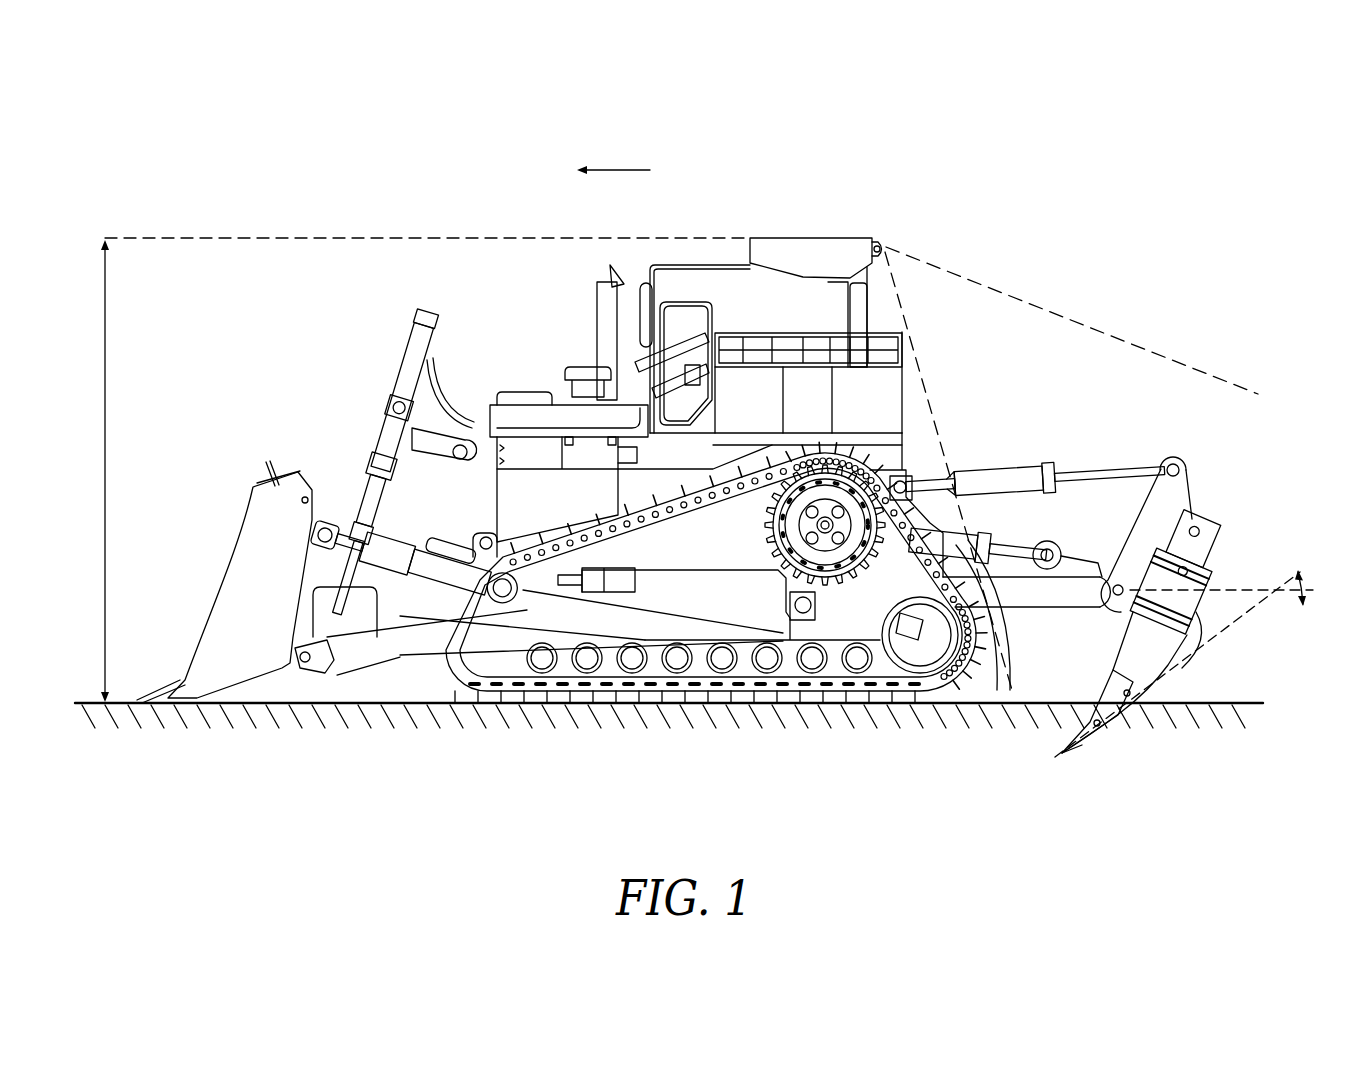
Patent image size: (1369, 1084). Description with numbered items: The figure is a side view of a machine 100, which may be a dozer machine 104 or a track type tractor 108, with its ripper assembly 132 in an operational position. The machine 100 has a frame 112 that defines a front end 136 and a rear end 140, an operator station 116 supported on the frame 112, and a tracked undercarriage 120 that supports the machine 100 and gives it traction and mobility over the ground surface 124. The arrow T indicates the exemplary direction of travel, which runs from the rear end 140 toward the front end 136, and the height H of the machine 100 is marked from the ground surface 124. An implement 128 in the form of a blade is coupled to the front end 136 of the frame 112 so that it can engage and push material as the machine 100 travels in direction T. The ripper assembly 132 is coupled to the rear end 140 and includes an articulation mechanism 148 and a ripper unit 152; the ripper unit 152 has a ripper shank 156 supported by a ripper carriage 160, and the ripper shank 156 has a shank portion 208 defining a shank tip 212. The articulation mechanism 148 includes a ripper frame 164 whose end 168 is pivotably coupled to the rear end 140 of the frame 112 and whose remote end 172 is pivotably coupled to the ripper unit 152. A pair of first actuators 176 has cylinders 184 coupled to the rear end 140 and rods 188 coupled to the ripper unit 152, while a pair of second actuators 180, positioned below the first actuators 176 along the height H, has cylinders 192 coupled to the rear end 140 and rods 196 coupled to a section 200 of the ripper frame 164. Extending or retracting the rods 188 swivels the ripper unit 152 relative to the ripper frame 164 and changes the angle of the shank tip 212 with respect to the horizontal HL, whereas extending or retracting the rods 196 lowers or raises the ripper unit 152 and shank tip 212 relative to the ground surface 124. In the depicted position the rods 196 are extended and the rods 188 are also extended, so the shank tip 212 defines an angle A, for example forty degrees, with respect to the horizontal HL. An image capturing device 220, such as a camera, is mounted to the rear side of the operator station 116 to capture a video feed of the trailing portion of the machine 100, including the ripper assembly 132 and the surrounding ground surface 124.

The machine 100 is at (216, 132).
The dozer machine 104 is at (240, 210).
The track type tractor 108 is at (1115, 312).
The frame 112 is at (920, 425).
The operator station 116 is at (868, 297).
The tracked undercarriage 120 is at (445, 695).
The ground surface 124 is at (1220, 700).
The implement 128 is at (230, 556).
The ripper assembly 132 is at (1194, 475).
The front end 136 is at (408, 500).
The rear end 140 is at (940, 478).
The articulation mechanism 148 is at (1075, 458).
The ripper unit 152 is at (1218, 595).
The ripper shank 156 is at (1097, 711).
The ripper carriage 160 is at (1171, 591).
The ripper frame 164 is at (1000, 695).
The end 168 is at (960, 695).
The end 172 is at (1106, 575).
The first actuators 176 is at (1109, 474).
The second actuators 180 is at (1020, 525).
The cylinders 184 is at (998, 480).
The rods 188 is at (1157, 464).
The cylinders 192 is at (945, 530).
The rods 196 is at (1028, 547).
The section 200 is at (1043, 590).
The shank portion 208 is at (1180, 672).
The shank tip 212 is at (1060, 755).
The image capturing device 220 is at (872, 236).
The height H is at (419, 470).
The direction of travel T is at (614, 157).
The horizontal HL is at (1263, 588).
The angle A is at (1312, 583).